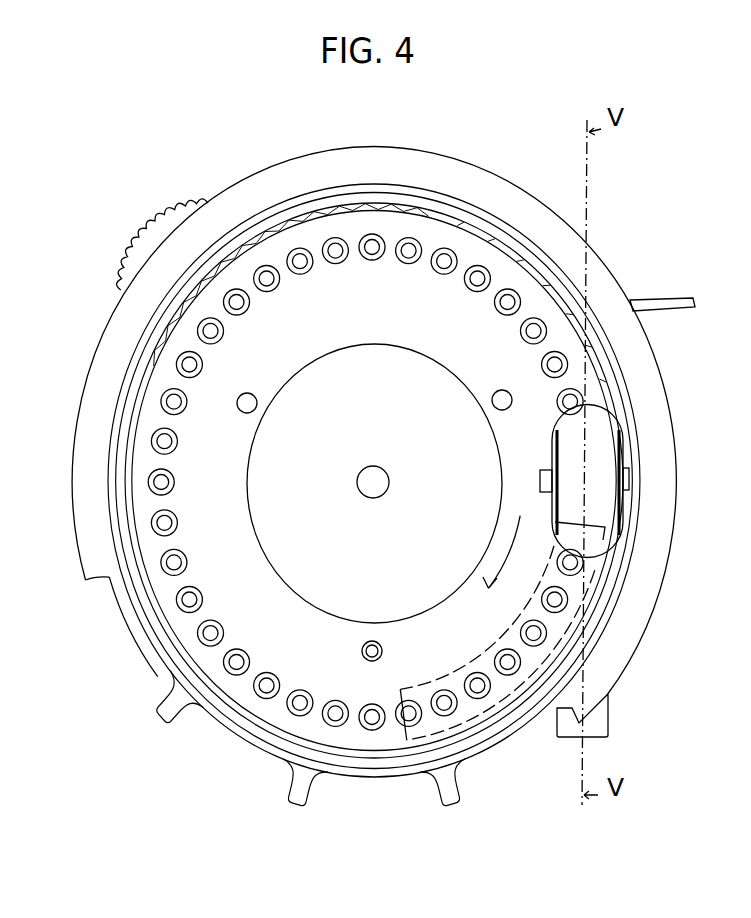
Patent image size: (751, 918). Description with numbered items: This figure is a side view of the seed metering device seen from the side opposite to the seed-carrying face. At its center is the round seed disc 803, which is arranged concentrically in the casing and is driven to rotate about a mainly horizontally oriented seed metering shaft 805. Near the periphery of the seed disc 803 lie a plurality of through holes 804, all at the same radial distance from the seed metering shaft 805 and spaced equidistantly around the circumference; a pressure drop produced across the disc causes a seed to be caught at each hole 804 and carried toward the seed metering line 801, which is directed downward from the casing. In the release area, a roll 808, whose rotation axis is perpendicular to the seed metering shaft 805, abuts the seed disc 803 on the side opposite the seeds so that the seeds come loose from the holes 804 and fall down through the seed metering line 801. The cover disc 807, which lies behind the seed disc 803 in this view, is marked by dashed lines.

The seed metering line 801 is at (603, 715).
The seed disc 803 is at (300, 660).
The through holes 804 is at (371, 720).
The seed metering shaft 805 is at (367, 493).
The cover disc 807 is at (495, 689).
The roll 808 is at (597, 430).